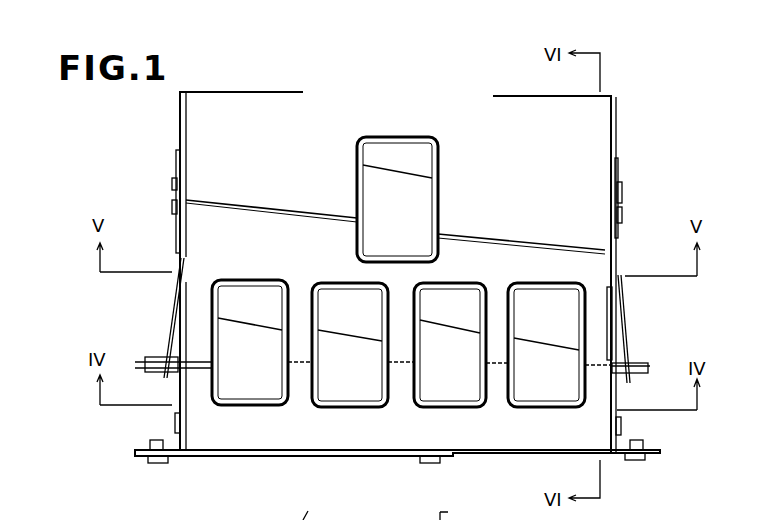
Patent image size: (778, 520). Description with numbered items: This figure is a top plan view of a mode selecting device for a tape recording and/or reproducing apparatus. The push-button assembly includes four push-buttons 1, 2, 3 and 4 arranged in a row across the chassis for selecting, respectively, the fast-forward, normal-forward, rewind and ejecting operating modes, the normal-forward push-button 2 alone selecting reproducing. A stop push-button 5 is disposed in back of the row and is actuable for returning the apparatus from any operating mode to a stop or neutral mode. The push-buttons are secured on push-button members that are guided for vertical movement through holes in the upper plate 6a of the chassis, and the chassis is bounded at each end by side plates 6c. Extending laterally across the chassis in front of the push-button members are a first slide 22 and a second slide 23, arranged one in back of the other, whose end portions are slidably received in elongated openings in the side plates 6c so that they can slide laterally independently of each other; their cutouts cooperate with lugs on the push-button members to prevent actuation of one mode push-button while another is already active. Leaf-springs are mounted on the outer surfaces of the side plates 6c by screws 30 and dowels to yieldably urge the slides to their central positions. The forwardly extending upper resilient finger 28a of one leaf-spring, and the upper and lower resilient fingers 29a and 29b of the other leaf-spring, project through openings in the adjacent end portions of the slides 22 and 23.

The push-button 1 is at (253, 394).
The normal-forward push-button 2 is at (357, 394).
The push-button 3 is at (456, 394).
The push-button 4 is at (553, 394).
The stop push-button 5 is at (430, 199).
The upper plate 6a is at (593, 241).
The side plate 6c is at (183, 125).
The first slide 22 is at (173, 405).
The second slide 23 is at (156, 358).
The upper resilient finger 28a is at (176, 312).
The upper resilient finger 29a is at (624, 341).
The lower resilient finger 29b is at (622, 299).
The screw 30 is at (174, 212).